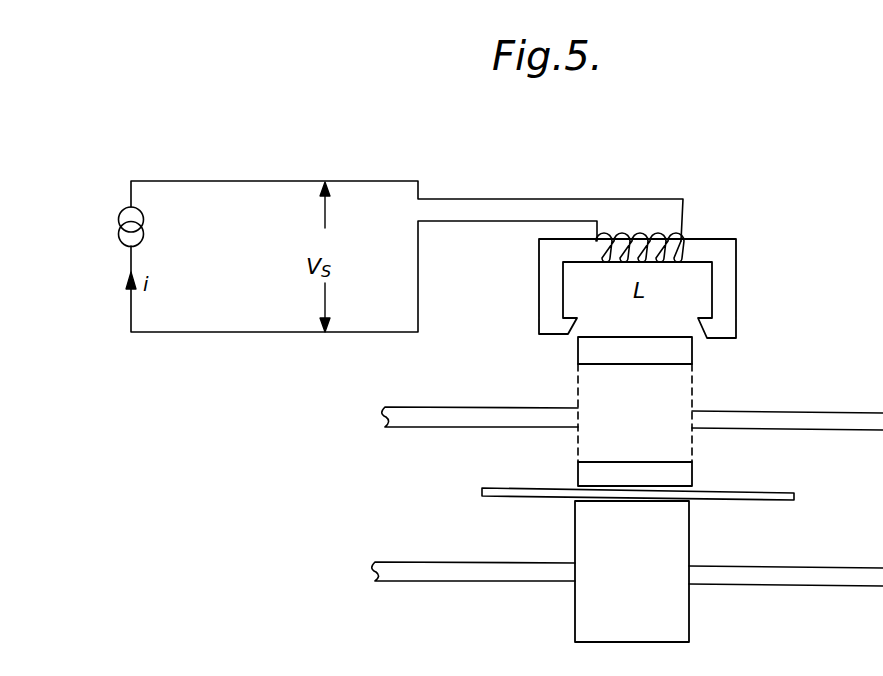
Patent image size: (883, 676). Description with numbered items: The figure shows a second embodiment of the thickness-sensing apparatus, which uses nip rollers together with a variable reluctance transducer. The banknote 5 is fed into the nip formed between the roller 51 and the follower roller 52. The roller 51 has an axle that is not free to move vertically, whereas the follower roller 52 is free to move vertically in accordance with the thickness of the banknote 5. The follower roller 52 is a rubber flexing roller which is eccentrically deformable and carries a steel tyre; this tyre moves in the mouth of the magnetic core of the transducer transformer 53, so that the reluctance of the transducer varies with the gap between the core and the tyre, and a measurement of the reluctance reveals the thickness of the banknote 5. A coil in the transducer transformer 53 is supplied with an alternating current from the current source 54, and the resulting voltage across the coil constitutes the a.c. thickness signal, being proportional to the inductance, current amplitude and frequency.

The banknote 5 is at (762, 493).
The roller 51 is at (627, 571).
The follower roller 52 is at (632, 411).
The transducer transformer 53 is at (738, 294).
The current source 54 is at (97, 248).